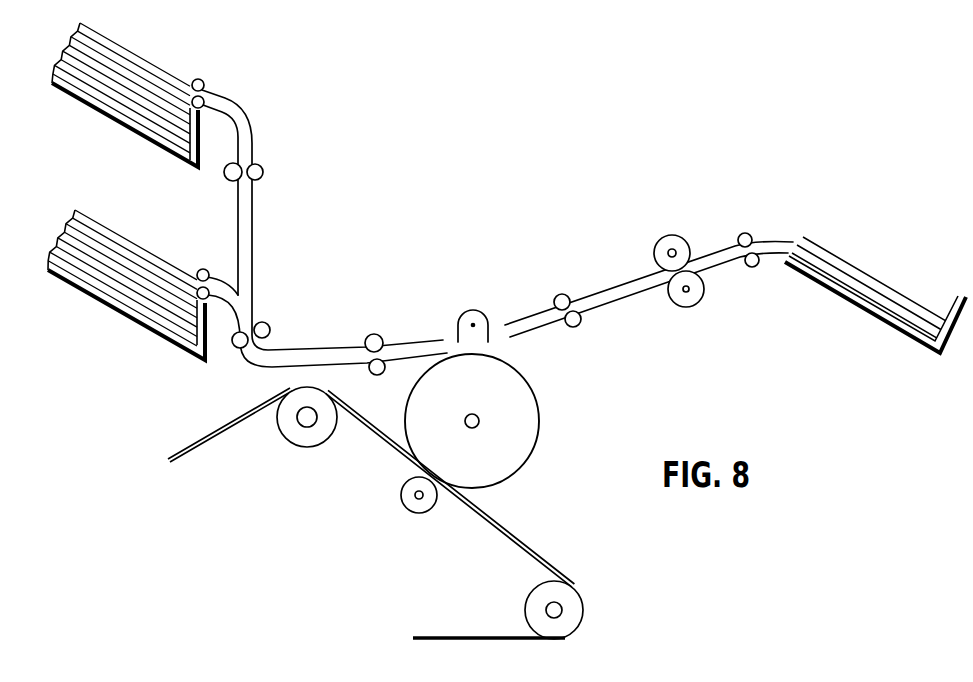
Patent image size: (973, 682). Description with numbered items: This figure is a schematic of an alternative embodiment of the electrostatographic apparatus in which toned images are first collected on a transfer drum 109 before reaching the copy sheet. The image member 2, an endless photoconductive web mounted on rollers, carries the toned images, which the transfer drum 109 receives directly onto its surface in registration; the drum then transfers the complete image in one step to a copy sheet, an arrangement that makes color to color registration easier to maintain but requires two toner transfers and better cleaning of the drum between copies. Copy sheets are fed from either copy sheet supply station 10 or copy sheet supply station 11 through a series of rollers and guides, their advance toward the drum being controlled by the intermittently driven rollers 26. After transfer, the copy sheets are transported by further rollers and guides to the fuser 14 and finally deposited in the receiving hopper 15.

The copy sheet supply station 10 is at (103, 120).
The copy sheet supply station 11 is at (95, 300).
The intermittently driven rollers 26 is at (371, 334).
The transfer drum 109 is at (541, 398).
The fuser 14 is at (662, 235).
The receiving hopper 15 is at (830, 293).
The image member 2 is at (518, 545).